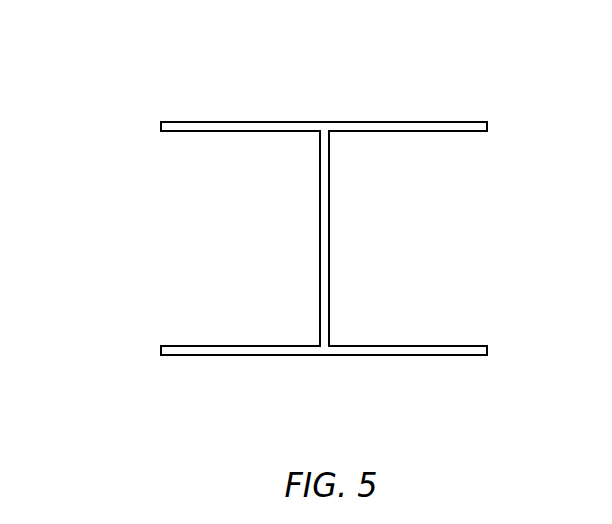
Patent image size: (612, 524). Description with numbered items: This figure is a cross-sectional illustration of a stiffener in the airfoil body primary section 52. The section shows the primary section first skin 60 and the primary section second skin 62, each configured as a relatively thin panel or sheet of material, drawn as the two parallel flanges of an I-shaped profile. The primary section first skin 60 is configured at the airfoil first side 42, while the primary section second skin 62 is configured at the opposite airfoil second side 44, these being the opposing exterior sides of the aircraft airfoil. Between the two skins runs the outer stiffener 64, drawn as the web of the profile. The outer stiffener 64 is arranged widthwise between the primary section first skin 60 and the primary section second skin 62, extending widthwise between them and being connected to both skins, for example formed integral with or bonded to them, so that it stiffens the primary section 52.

The airfoil body primary section 52 is at (114, 80).
The airfoil second side 44 is at (345, 121).
The primary section second skin 62 is at (456, 110).
The outer stiffener 64 is at (340, 235).
The airfoil first side 42 is at (345, 357).
The primary section first skin 60 is at (445, 372).